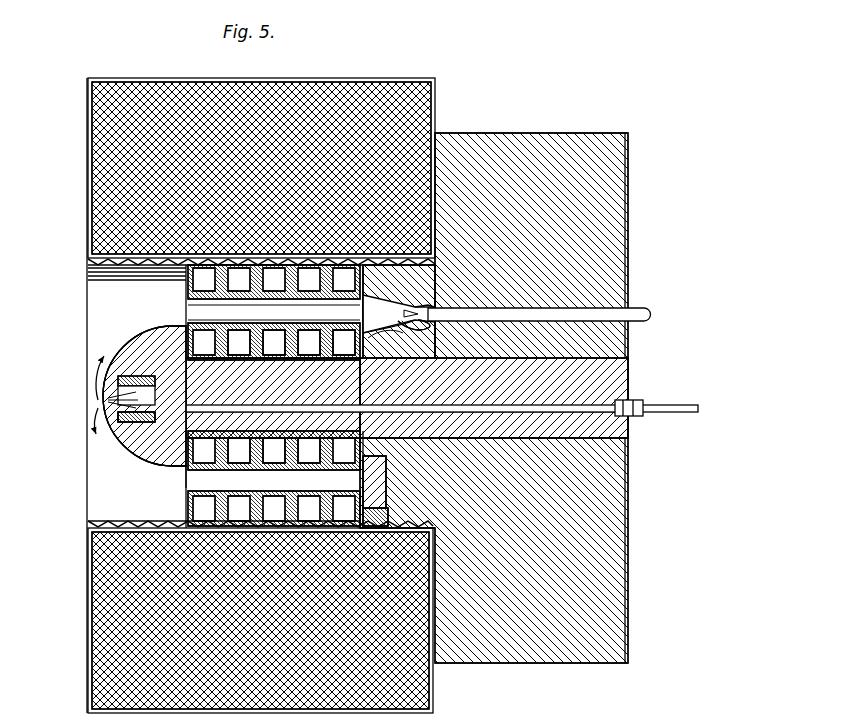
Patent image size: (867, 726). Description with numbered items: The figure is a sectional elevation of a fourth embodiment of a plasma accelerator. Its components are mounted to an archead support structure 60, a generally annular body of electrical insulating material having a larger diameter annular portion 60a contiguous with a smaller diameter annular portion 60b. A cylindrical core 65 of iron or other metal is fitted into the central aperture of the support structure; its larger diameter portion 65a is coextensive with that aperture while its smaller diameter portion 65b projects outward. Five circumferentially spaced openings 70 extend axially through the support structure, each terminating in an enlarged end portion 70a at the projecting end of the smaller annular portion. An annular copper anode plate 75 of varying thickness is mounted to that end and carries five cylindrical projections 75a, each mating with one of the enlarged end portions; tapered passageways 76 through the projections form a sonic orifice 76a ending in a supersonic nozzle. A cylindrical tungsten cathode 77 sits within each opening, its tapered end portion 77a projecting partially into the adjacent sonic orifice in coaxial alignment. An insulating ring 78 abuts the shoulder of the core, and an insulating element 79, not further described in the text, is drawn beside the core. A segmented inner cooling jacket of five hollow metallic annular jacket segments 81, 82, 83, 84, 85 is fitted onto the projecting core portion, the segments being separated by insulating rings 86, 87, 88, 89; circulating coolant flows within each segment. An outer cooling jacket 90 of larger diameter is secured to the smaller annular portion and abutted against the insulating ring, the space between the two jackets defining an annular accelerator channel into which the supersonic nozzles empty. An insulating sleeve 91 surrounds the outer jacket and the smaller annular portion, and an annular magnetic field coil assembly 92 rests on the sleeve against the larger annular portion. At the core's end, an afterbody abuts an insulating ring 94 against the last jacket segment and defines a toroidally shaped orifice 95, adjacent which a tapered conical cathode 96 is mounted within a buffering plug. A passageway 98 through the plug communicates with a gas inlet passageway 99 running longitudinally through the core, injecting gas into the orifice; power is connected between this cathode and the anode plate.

The archead support structure 60 is at (615, 172).
The larger diameter annular portion 60a is at (605, 266).
The smaller diameter annular portion 60b is at (372, 257).
The cylindrical core 65 is at (612, 372).
The larger diameter portion 65a is at (612, 421).
The smaller diameter portion 65b is at (302, 385).
The openings 70 is at (625, 306).
The enlarged end portion 70a is at (412, 300).
The anode plate 75 is at (372, 476).
The cylindrical projections 75a is at (376, 294).
The passageways 76 is at (366, 348).
The sonic orifice 76a is at (408, 306).
The cathode 77 is at (424, 308).
The tapered end portion 77a is at (393, 326).
The insulating ring 78 is at (378, 507).
The partition 79 is at (332, 352).
The jacket segment 81 is at (334, 332).
The jacket segment 82 is at (299, 332).
The jacket segment 83 is at (264, 332).
The jacket segment 84 is at (228, 332).
The jacket segment 85 is at (200, 322).
The insulating ring 86 is at (340, 432).
The insulating ring 87 is at (300, 432).
The insulating ring 88 is at (257, 432).
The insulating ring 89 is at (215, 432).
The outer cooling jacket 90 is at (176, 272).
The insulating sleeve 91 is at (86, 268).
The magnetic field coil assembly 92 is at (95, 176).
The insulating ring 94 is at (174, 445).
The orifice 95 is at (98, 389).
The conical cathode 96 is at (116, 404).
The passageway 98 is at (128, 400).
The gas inlet passageway 99 is at (536, 382).